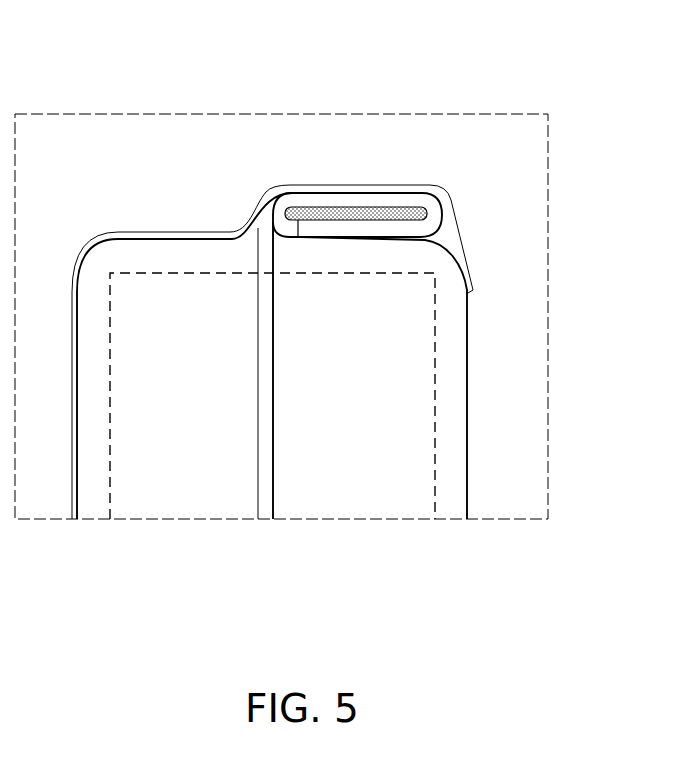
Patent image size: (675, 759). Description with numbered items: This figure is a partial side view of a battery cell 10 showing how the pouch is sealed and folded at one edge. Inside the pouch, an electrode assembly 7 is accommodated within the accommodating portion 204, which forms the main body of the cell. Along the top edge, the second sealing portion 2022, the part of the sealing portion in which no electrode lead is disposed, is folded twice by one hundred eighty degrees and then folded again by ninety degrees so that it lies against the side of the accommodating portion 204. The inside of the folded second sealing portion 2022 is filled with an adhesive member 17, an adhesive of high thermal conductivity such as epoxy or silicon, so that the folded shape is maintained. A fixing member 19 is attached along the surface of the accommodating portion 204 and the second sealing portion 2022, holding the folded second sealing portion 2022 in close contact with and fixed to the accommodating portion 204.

The battery cell 10 is at (468, 485).
The electrode assembly 7 is at (437, 407).
The fixing member 19 is at (178, 237).
The accommodating portion 204 is at (467, 350).
The adhesive member 17 is at (407, 206).
The second sealing portion 2022 is at (343, 233).